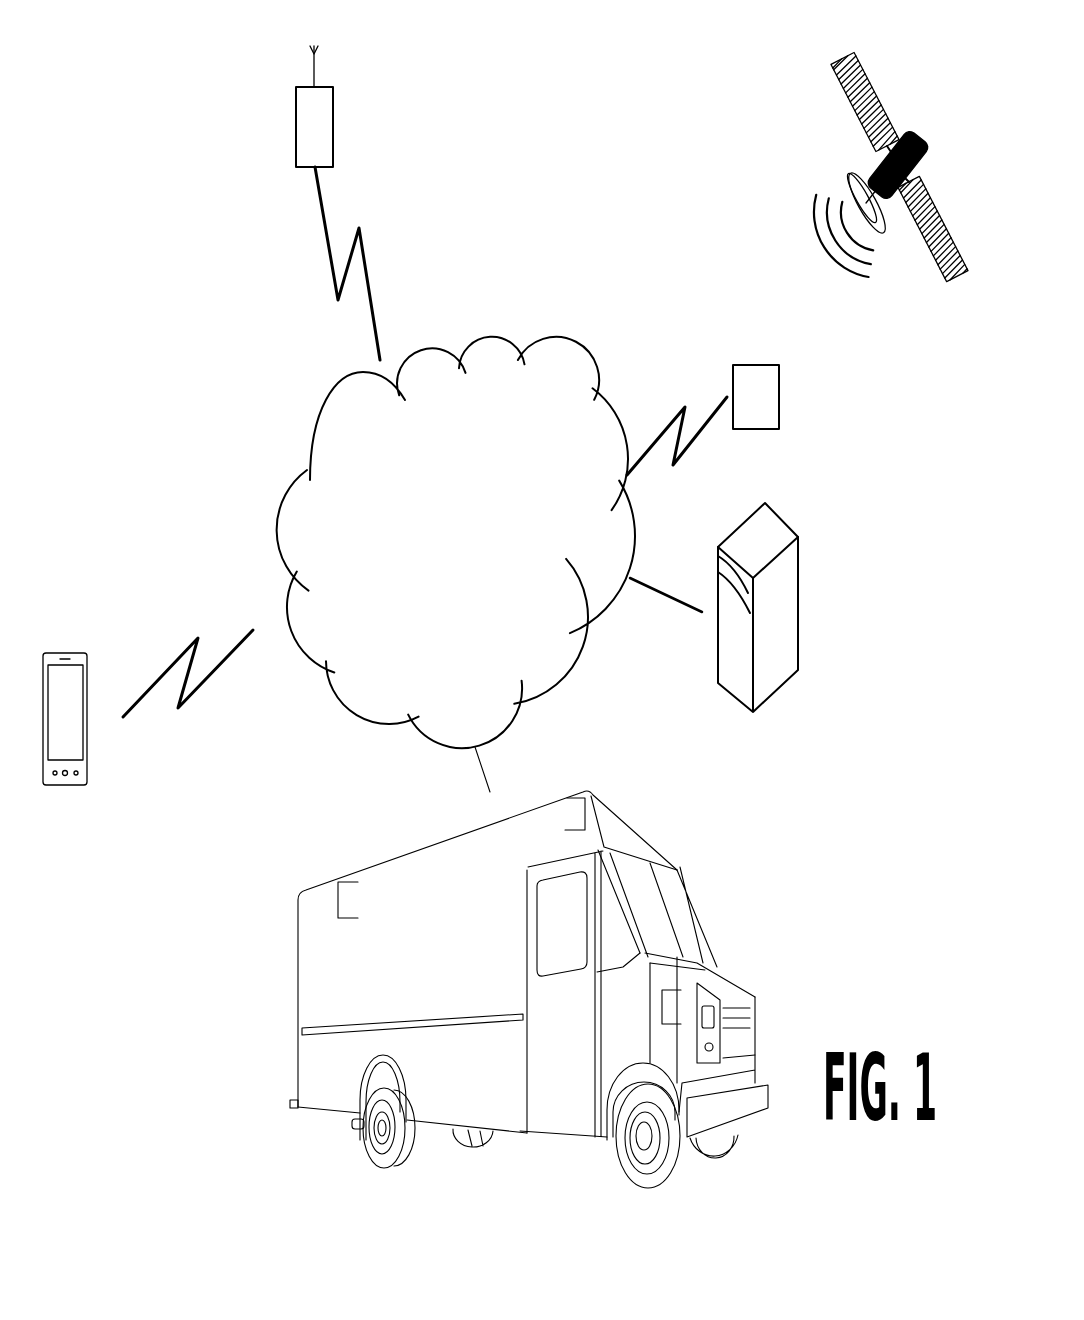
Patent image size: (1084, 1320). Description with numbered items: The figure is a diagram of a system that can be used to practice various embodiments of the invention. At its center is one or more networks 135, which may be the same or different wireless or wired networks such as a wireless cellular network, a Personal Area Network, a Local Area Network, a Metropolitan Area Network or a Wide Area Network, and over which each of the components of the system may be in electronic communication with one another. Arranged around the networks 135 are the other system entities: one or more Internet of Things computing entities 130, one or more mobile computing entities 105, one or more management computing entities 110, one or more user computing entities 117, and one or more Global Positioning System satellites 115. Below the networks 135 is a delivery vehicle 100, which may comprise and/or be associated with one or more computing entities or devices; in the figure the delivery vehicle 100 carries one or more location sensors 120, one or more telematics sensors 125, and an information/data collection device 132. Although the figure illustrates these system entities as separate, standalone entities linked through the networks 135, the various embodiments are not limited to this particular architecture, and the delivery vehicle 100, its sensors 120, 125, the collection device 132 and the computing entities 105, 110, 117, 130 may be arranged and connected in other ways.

The delivery vehicle 100 is at (450, 833).
The mobile computing entity 105 is at (148, 735).
The management computing entity 110 is at (714, 634).
The Global Positioning System (GPS) satellite 115 is at (880, 166).
The user computing entity 117 is at (703, 399).
The location sensor 120 is at (572, 815).
The telematics sensor 125 is at (348, 895).
The Internet of Things (IoT) computing entity 130 is at (333, 99).
The information/data collection device 132 is at (670, 1005).
The network 135 is at (456, 542).